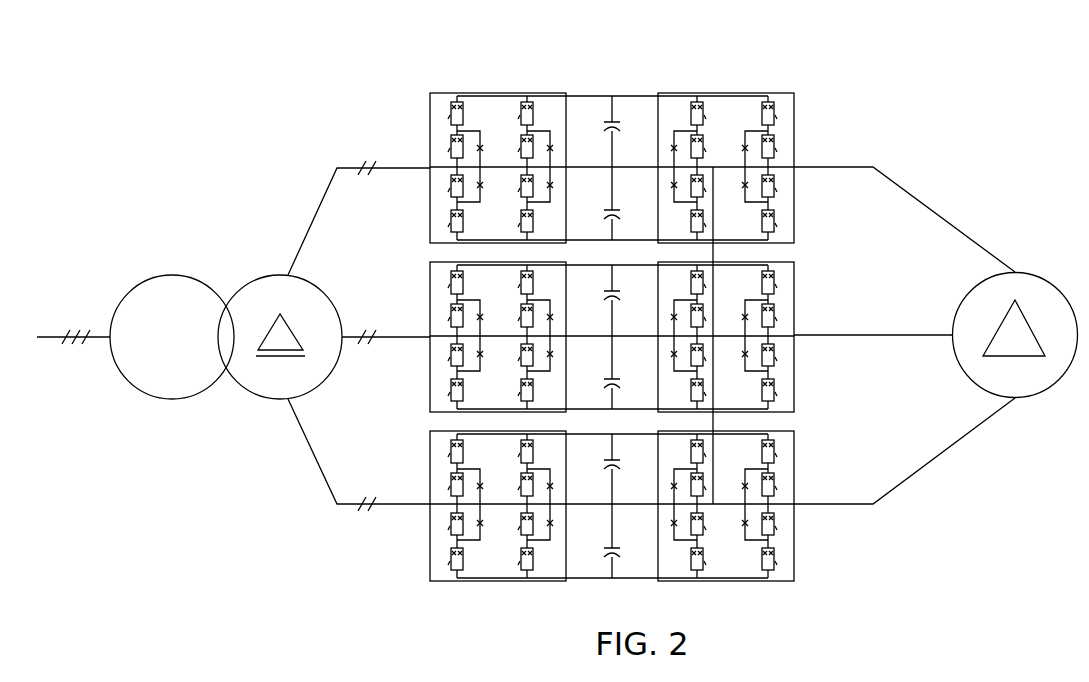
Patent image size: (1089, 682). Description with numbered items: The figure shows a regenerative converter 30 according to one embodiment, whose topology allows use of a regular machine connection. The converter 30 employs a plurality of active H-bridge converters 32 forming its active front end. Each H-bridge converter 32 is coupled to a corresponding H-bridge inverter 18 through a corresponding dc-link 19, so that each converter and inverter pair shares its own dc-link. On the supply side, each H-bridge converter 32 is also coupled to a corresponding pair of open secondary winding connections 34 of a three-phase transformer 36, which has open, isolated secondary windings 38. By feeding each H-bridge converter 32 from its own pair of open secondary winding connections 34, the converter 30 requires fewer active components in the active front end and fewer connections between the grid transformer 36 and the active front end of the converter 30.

The regenerative converter 30 is at (585, 33).
The active H-bridge converter 32 is at (478, 84).
The dc-link 19 is at (612, 80).
The H-bridge inverter 18 is at (733, 80).
The open secondary winding connection 34 is at (368, 156).
The three-phase transformer 36 is at (214, 278).
The open secondary winding 38 is at (323, 392).